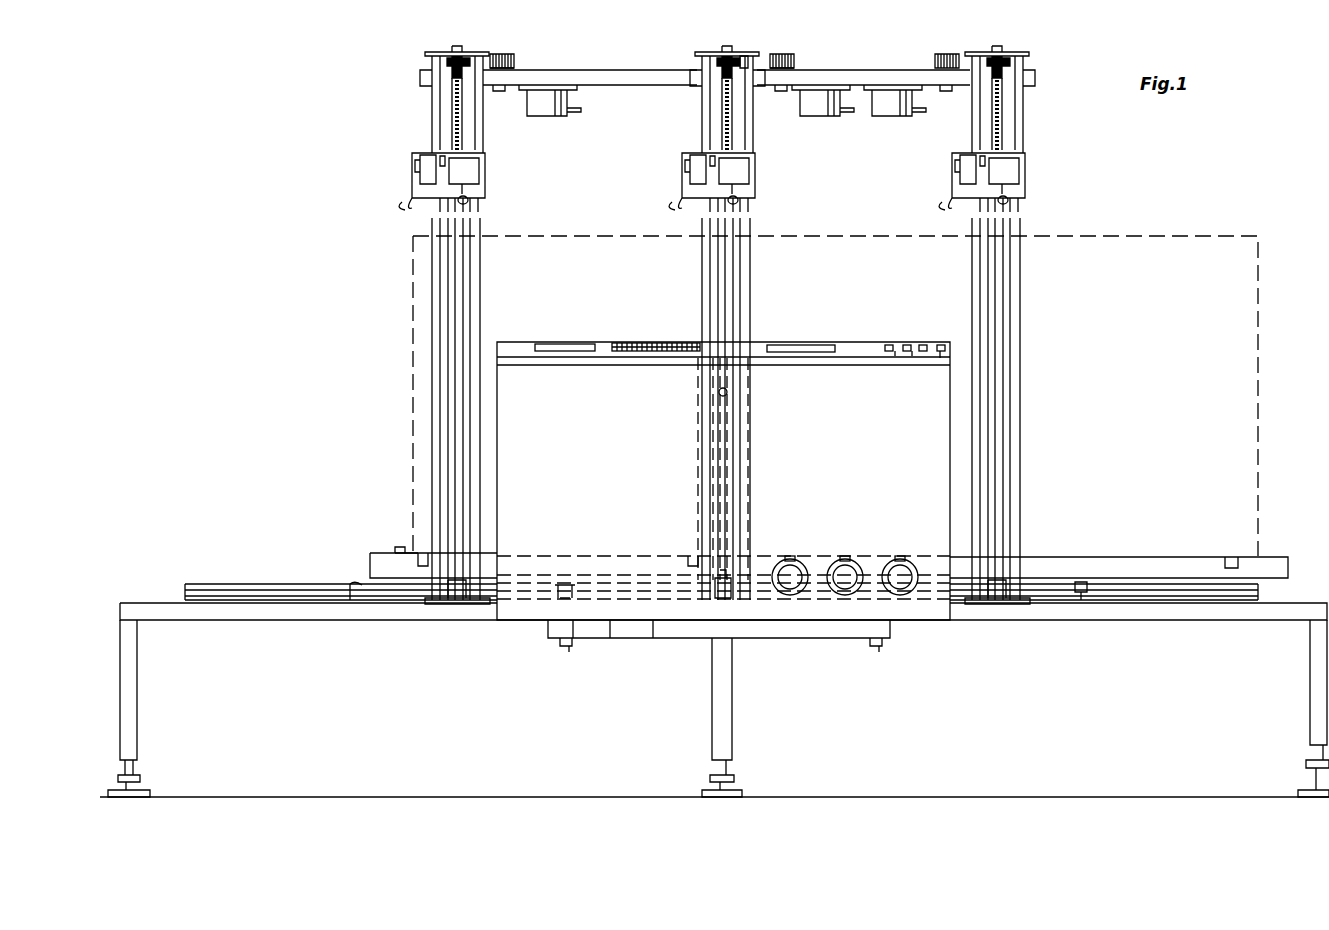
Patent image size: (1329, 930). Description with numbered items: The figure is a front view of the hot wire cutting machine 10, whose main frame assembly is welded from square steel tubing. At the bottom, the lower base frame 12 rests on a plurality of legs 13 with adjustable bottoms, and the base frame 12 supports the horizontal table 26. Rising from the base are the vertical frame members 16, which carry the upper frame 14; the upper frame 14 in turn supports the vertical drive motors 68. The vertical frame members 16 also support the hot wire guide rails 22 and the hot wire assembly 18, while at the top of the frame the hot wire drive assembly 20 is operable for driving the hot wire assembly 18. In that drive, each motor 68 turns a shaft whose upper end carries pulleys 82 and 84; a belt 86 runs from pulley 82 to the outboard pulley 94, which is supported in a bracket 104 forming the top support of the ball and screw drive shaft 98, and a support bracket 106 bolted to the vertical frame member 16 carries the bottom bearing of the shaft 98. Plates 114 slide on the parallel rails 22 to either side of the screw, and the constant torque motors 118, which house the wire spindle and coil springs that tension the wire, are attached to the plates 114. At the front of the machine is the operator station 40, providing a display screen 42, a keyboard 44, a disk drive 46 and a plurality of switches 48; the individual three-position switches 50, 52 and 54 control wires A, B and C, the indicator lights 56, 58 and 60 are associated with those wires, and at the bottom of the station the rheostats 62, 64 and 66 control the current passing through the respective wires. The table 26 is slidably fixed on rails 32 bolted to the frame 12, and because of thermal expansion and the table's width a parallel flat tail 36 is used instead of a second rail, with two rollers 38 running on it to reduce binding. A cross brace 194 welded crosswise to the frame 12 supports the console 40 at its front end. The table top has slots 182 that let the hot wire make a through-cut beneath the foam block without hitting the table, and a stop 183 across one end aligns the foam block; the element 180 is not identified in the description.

The hot wire cutting machine 10 is at (410, 115).
The lower base frame 12 is at (150, 603).
The legs 13 is at (140, 700).
The upper frame 14 is at (605, 78).
The vertical frame members 16 is at (432, 286).
The hot wire assembly 18 is at (408, 180).
The hot wire drive assembly 20 is at (444, 52).
The hot wire guide rails 22 is at (440, 250).
The horizontal table 26 is at (1110, 552).
The rails 32 is at (295, 584).
The parallel flat tail 36 is at (358, 600).
The rollers 38 is at (565, 585).
The operator station 40 is at (850, 340).
The display screen 42 is at (555, 344).
The keyboard 44 is at (645, 343).
The disk drive 46 is at (800, 345).
The switches 48 is at (889, 344).
The switch 50 is at (905, 344).
The switch 52 is at (921, 343).
The switch 54 is at (940, 344).
The indicator light 56 is at (897, 352).
The indicator light 58 is at (914, 353).
The indicator light 60 is at (943, 353).
The rheostat 62 is at (790, 558).
The rheostat 64 is at (845, 558).
The rheostat 66 is at (900, 558).
The drive motors 68 is at (545, 116).
The pulley 82 is at (514, 66).
The pulley 84 is at (514, 56).
The belt 86 is at (744, 56).
The pulley 94 is at (447, 66).
The ball and screw drive shaft 98 is at (458, 122).
The brackets 104 is at (472, 54).
The support bracket 106 is at (455, 604).
The plate 114 is at (484, 196).
The constant torque motor 118 is at (422, 158).
The right rail 180 is at (1275, 557).
The slots 182 is at (420, 552).
The stop 183 is at (403, 548).
The cross brace 194 is at (572, 648).